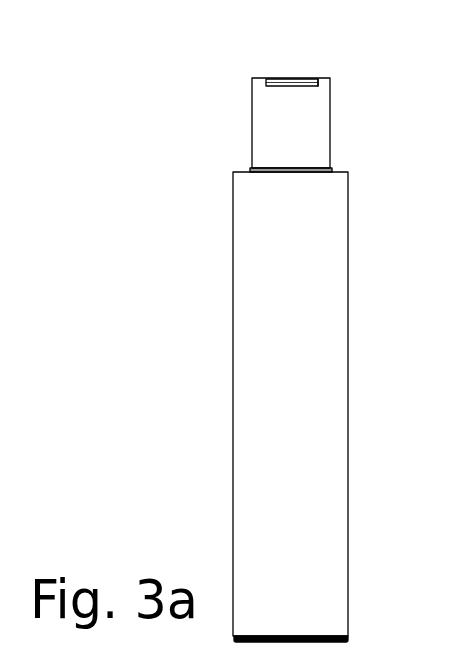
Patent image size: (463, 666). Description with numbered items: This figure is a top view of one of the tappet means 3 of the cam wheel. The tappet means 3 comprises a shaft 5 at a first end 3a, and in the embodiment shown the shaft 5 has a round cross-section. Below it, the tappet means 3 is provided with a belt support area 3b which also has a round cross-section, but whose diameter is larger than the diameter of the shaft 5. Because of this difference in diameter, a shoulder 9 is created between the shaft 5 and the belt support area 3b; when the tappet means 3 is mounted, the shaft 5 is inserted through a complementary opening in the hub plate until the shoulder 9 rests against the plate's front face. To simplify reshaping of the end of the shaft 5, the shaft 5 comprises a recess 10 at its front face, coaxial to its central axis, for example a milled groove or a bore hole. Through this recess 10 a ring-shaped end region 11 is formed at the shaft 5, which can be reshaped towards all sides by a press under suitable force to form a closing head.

The tappet means 3 is at (247, 324).
The first end 3a is at (279, 129).
The belt support area 3b is at (252, 385).
The shaft 5 is at (307, 138).
The shoulder 9 is at (243, 164).
The recess 10 is at (280, 82).
The ring-shaped end region 11 is at (330, 79).